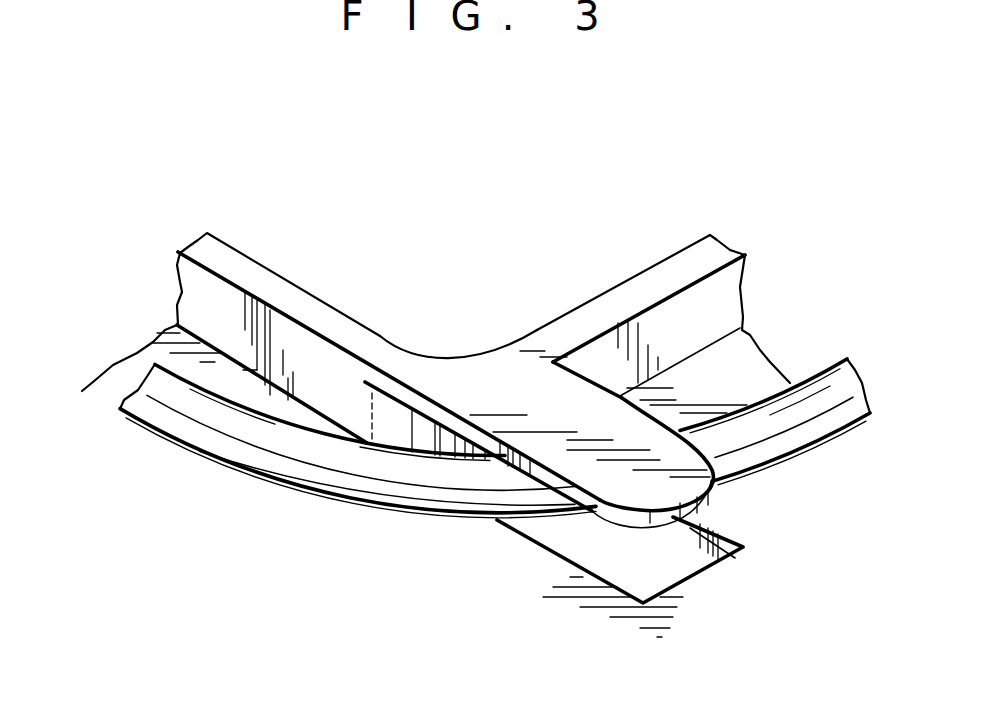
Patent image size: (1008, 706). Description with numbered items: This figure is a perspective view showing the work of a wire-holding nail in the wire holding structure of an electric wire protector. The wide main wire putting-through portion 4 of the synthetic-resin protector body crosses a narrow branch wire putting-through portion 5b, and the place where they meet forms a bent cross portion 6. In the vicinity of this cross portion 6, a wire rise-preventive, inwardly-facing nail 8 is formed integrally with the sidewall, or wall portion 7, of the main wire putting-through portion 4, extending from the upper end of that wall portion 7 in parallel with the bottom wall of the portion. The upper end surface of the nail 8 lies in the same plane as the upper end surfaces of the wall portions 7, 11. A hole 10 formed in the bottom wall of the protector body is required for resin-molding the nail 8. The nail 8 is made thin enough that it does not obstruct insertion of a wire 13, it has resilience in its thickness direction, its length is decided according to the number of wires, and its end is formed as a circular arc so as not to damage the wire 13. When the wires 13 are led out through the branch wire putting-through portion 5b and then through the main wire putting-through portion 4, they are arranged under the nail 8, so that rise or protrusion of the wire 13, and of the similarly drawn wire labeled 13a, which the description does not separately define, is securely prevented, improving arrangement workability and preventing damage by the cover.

The main wire putting-through portion 4 is at (625, 285).
The branch wire putting-through portion 5b is at (290, 282).
The cross portion 6 is at (463, 357).
The wall portion 7 is at (695, 303).
The wire rise-preventive inwardly-facing nail 8 is at (633, 495).
The hole 10 is at (630, 570).
The wall portion 11 is at (203, 295).
The wire 13 is at (777, 442).
The lower layer of curved rail 13a is at (207, 442).